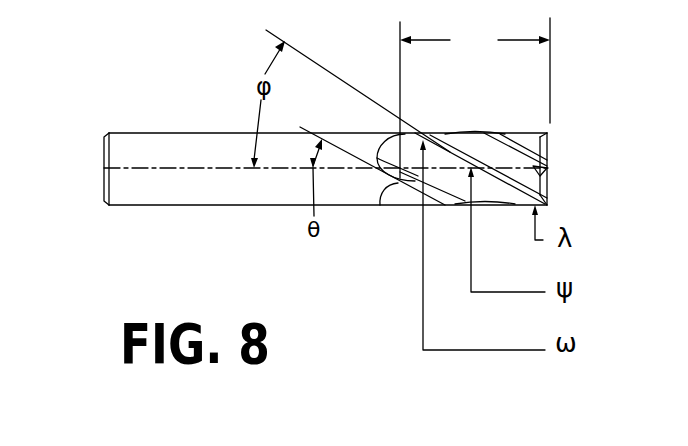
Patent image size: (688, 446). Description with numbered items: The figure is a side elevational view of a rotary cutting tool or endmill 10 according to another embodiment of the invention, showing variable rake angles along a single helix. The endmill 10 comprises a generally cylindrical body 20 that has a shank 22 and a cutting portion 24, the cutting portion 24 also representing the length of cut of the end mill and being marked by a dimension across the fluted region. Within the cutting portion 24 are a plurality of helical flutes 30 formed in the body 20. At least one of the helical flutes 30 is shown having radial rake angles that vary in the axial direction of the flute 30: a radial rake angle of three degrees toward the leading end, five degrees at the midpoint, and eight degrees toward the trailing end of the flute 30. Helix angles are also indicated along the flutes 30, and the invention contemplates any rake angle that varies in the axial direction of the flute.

The endmill 10 is at (166, 100).
The body 20 is at (98, 157).
The shank 22 is at (152, 206).
The cutting portion 24 is at (475, 98).
The helical flutes 30 is at (487, 188).